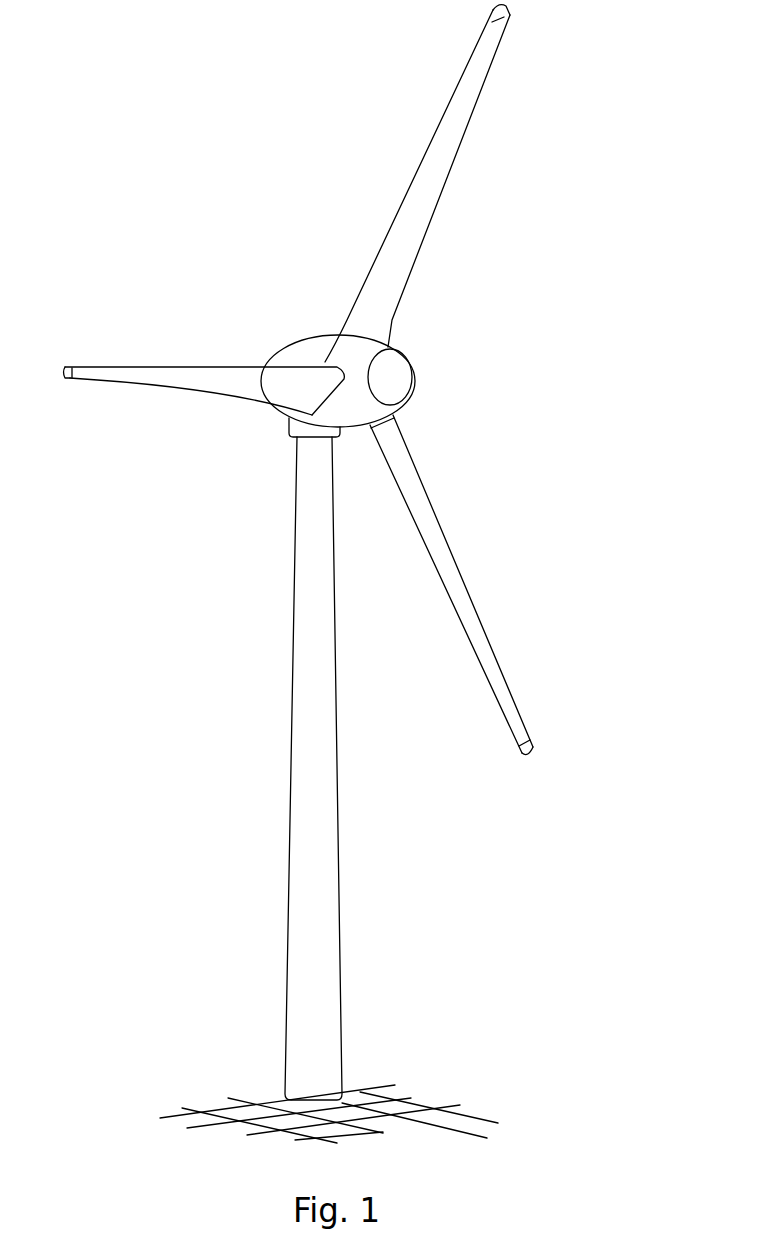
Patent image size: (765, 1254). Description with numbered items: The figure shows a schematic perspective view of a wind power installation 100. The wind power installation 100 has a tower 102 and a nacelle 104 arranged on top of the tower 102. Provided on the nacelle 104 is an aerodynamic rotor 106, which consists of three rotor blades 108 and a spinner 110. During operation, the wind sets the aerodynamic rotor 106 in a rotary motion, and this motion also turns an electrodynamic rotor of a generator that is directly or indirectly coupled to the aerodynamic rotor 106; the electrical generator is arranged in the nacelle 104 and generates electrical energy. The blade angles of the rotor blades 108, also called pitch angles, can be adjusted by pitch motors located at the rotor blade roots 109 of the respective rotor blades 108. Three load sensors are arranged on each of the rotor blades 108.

The wind power installation 100 is at (246, 510).
The tower 102 is at (320, 872).
The nacelle 104 is at (302, 338).
The aerodynamic rotor 106 is at (486, 296).
The rotor blades 108 is at (455, 137).
The rotor blade roots 109 is at (397, 417).
The spinner 110 is at (394, 381).